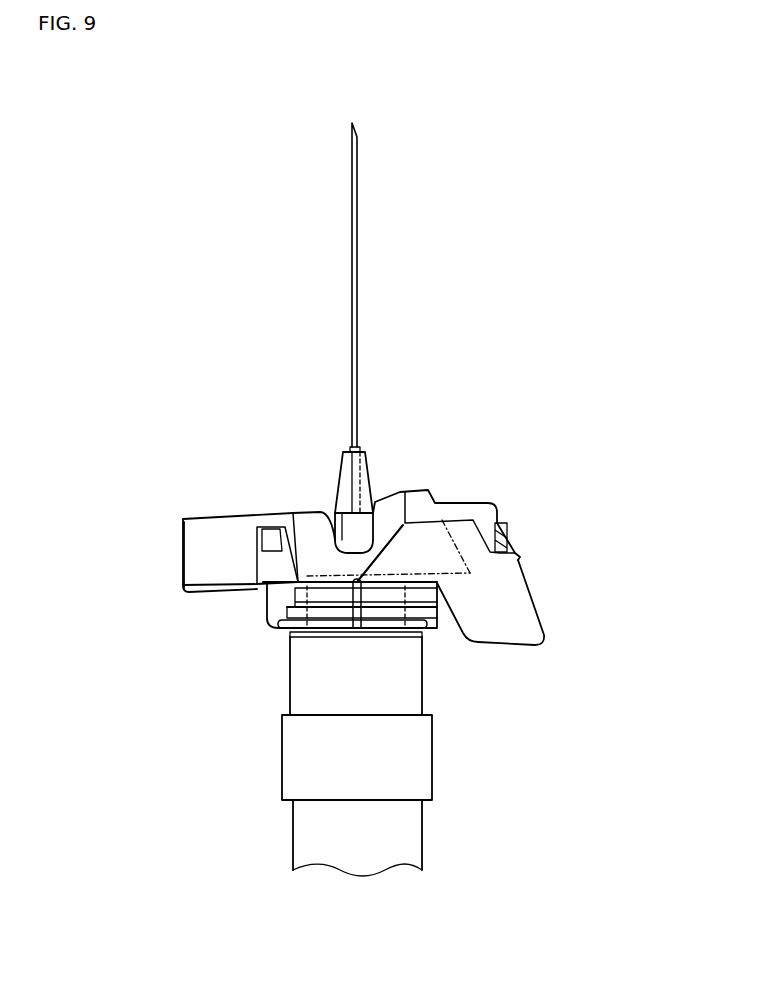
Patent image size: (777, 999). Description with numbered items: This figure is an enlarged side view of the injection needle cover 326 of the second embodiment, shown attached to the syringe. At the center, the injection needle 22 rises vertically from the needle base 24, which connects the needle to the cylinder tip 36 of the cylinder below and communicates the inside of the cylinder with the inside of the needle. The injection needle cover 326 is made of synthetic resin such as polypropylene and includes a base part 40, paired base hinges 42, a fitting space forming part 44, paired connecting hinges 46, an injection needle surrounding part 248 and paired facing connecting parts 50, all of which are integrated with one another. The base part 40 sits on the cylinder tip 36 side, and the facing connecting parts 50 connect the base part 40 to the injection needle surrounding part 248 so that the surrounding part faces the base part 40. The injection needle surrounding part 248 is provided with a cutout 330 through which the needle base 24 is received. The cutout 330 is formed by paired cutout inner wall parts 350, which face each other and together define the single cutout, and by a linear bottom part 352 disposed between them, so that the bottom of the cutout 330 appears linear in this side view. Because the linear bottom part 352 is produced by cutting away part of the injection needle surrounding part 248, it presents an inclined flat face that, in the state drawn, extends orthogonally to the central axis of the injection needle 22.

The injection needle 22 is at (356, 292).
The needle base 24 is at (362, 505).
The cylinder tip 36 is at (298, 648).
The base part 40 is at (437, 625).
The base hinges 42 is at (357, 582).
The fitting space forming part 44 is at (447, 558).
The connecting hinges 46 is at (517, 557).
The facing connecting parts 50 is at (442, 580).
The injection needle surrounding part 248 is at (182, 553).
The injection needle cover 326 is at (237, 497).
The cutout 330 is at (445, 585).
The cutout inner wall parts 350 is at (336, 512).
The linear bottom part 352 is at (327, 543).